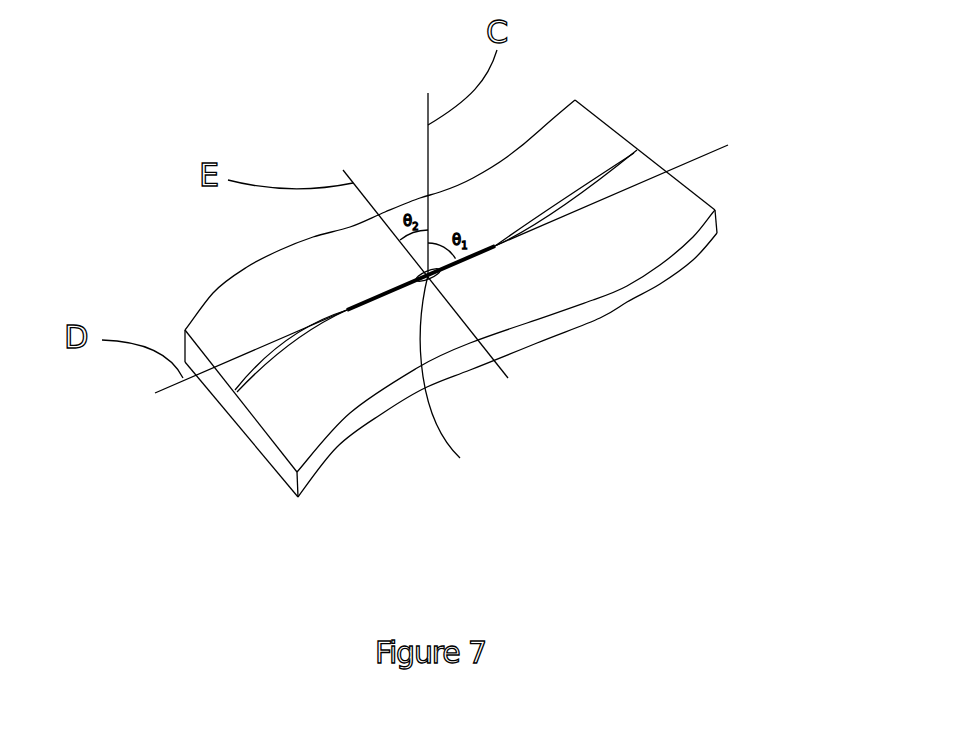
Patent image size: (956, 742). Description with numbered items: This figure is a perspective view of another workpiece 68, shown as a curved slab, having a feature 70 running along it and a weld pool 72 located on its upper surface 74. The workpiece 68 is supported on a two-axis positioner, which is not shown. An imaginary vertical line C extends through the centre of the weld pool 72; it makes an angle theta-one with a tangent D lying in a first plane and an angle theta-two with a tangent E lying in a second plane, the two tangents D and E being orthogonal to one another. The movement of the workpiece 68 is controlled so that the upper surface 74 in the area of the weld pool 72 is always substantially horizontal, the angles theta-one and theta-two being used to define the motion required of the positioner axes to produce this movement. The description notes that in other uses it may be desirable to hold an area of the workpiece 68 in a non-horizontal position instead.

The workpiece 68 is at (278, 465).
The feature 70 is at (493, 245).
The weld pool 72 is at (458, 376).
The upper surface 74 is at (677, 228).